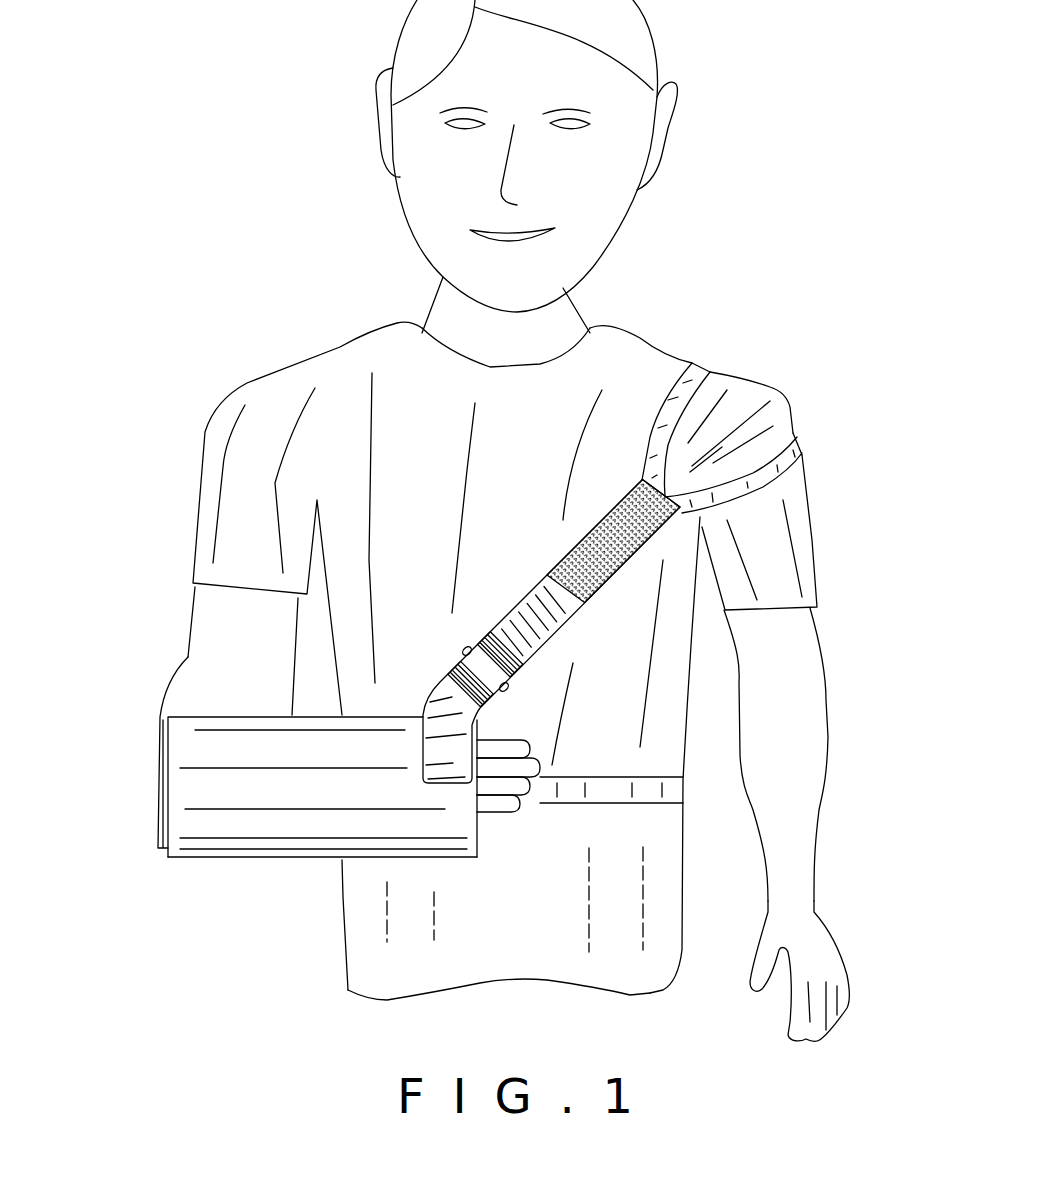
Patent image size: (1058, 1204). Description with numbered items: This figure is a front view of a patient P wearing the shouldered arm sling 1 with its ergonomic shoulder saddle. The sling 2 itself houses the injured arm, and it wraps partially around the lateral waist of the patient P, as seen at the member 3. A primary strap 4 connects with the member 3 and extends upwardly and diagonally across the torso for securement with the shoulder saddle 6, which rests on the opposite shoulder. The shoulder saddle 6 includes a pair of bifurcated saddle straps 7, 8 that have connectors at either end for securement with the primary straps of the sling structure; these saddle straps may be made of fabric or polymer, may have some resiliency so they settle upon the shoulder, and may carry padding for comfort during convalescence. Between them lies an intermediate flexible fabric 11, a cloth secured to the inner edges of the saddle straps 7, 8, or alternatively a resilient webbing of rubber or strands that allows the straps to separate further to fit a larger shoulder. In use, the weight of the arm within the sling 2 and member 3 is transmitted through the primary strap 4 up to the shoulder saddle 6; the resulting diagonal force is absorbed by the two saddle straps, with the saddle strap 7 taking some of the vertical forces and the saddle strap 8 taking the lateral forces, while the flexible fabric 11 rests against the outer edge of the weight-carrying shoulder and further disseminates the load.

The patient P is at (283, 316).
The shouldered arm sling 1 is at (806, 302).
The sling 2 is at (157, 813).
The member 3 is at (313, 847).
The primary strap 4 is at (585, 542).
The shoulder saddle 6 is at (812, 401).
The saddle strap 7 is at (692, 363).
The saddle strap 8 is at (800, 455).
The intermediate flexible fabric 11 is at (748, 393).